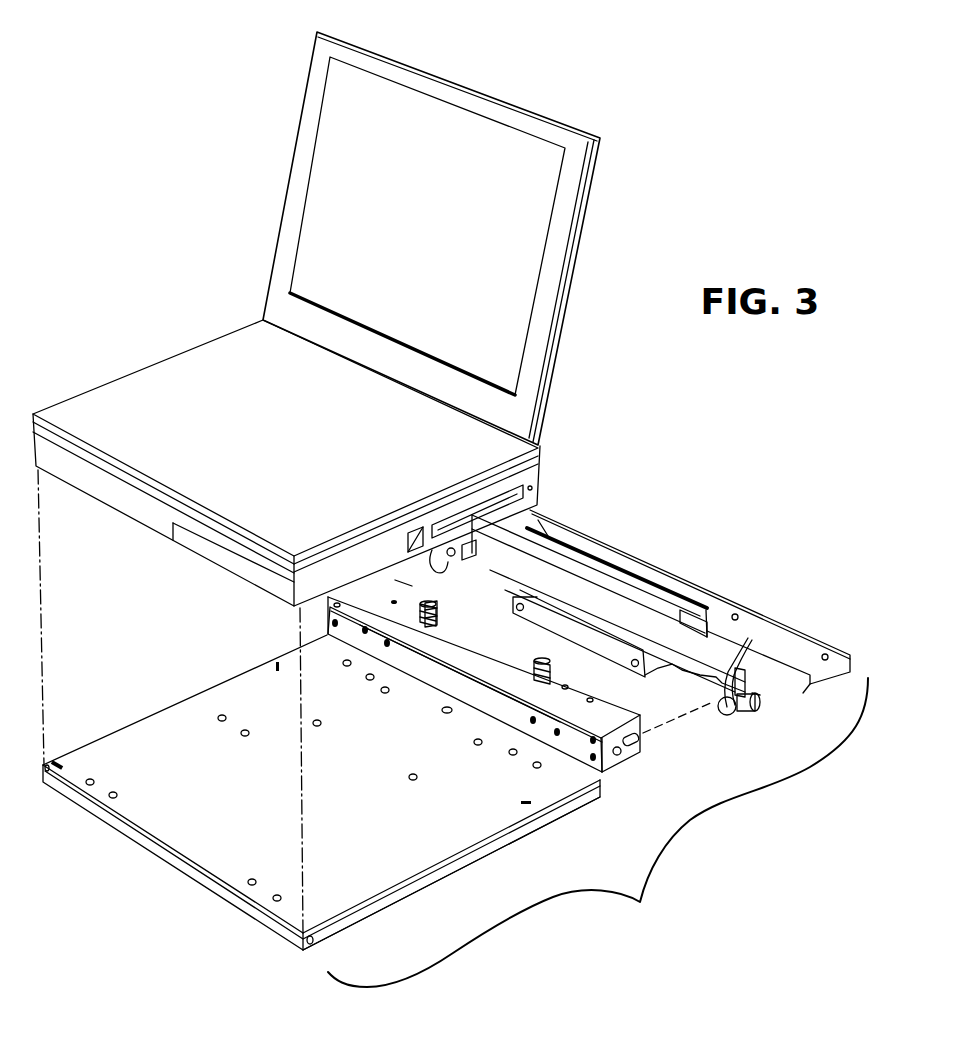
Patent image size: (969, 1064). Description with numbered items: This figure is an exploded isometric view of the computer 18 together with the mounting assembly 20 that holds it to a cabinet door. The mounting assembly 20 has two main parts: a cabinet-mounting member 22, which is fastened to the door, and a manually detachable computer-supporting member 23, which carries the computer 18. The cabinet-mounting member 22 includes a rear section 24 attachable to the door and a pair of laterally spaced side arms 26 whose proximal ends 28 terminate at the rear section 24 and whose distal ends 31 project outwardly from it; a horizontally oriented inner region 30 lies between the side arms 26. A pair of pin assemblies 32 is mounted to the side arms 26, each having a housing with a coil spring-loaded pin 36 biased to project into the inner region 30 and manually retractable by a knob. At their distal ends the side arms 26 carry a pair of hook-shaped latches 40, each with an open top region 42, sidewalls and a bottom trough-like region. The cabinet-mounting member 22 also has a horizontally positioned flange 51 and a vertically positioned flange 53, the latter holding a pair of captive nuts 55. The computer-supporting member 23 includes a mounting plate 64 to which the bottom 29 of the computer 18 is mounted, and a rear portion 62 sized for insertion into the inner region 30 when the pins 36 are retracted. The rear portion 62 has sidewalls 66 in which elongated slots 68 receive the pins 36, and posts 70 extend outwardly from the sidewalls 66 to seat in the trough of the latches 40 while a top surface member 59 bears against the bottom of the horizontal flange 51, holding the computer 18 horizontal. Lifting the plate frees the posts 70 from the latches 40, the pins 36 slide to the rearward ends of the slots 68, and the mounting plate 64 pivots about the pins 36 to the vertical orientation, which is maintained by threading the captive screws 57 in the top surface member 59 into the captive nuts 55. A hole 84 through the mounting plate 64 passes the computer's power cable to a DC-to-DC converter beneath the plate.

The computer 18 is at (178, 376).
The bottom of the computer 29 is at (155, 532).
The distal ends of the side arms 31 is at (400, 585).
The hook-shaped latch 40 is at (424, 563).
The open top region 42 is at (442, 556).
The coil spring-loaded pin 36 is at (470, 540).
The proximal ends of the side arms 28 is at (540, 530).
The inner region 30 is at (610, 625).
The cabinet-mounting member 22 is at (662, 560).
The horizontally positioned flange 51 is at (682, 622).
The rear section 24 is at (800, 643).
The mounting assembly 20 is at (688, 479).
The captive nuts 55 is at (515, 611).
The side arms 26 is at (420, 618).
The captive screws 57 is at (418, 624).
The top surface member 59 is at (455, 650).
The hole 84 is at (442, 712).
The vertically positioned flange 53 is at (510, 676).
The mounting plate 64 is at (328, 796).
The rear portion 62 is at (510, 722).
The sidewalls 66 is at (606, 770).
The posts 70 is at (622, 755).
The elongated slots 68 is at (641, 739).
The pin assemblies 32 is at (768, 715).
The computer-supporting member 23 is at (450, 862).